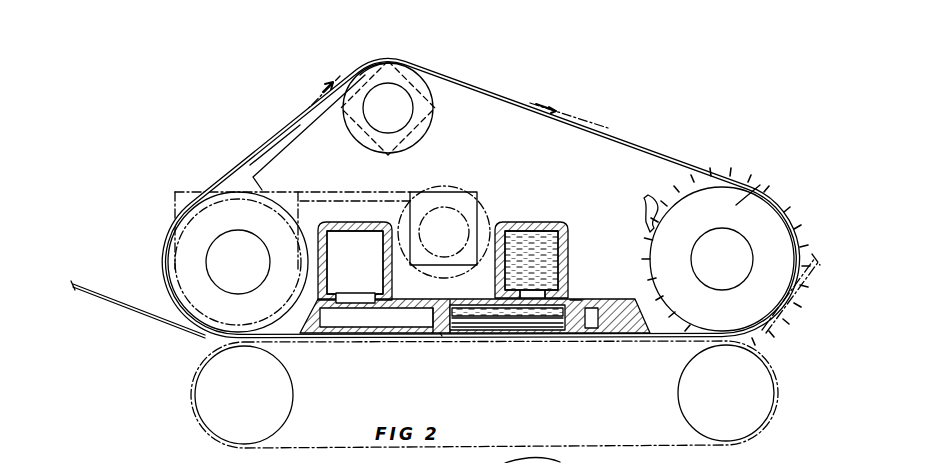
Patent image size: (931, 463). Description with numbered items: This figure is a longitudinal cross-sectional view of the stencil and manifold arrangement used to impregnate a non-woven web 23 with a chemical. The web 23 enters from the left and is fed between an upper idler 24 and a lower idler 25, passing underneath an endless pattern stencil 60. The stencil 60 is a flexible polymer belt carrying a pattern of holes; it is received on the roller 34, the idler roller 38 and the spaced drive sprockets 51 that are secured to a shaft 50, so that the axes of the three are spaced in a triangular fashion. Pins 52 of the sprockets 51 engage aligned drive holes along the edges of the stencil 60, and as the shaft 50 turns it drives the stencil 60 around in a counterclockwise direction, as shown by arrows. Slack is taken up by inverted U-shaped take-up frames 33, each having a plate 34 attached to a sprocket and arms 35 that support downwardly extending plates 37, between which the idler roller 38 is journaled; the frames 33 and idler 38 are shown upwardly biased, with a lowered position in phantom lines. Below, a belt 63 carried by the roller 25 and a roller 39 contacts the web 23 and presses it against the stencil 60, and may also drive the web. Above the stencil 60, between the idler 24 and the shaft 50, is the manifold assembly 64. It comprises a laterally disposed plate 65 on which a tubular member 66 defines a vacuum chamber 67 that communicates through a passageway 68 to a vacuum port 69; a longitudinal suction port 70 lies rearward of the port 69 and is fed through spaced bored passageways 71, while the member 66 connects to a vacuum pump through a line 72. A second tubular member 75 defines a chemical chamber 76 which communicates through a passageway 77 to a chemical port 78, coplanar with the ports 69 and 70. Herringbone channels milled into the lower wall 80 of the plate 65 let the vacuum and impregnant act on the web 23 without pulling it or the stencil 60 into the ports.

The non-woven web 23 is at (83, 283).
The upper idler 24 is at (178, 222).
The lower idler 25 is at (196, 400).
The take-up frame 33 is at (374, 80).
The plate 34 is at (213, 190).
The arm 35 is at (275, 137).
The downwardly extending plate 37 is at (393, 64).
The idler roller 38 is at (401, 100).
The roller 39 is at (756, 416).
The shaft 50 is at (740, 240).
The drive sprocket 51 is at (740, 200).
The pin 52 is at (650, 196).
The stencil 60 is at (636, 142).
The belt 63 is at (300, 345).
The manifold assembly 64 is at (538, 222).
The plate 65 is at (610, 298).
The tubular member 66 is at (320, 236).
The vacuum chamber 67 is at (343, 237).
The passageway 68 is at (365, 298).
The vacuum port 69 is at (357, 322).
The suction port 70 is at (592, 328).
The bored passageway 71 is at (438, 318).
The line 72 is at (575, 328).
The tubular member 75 is at (521, 222).
The chemical chamber 76 is at (540, 250).
The passageway 77 is at (528, 312).
The chemical port 78 is at (472, 322).
The lower wall 80 is at (444, 335).